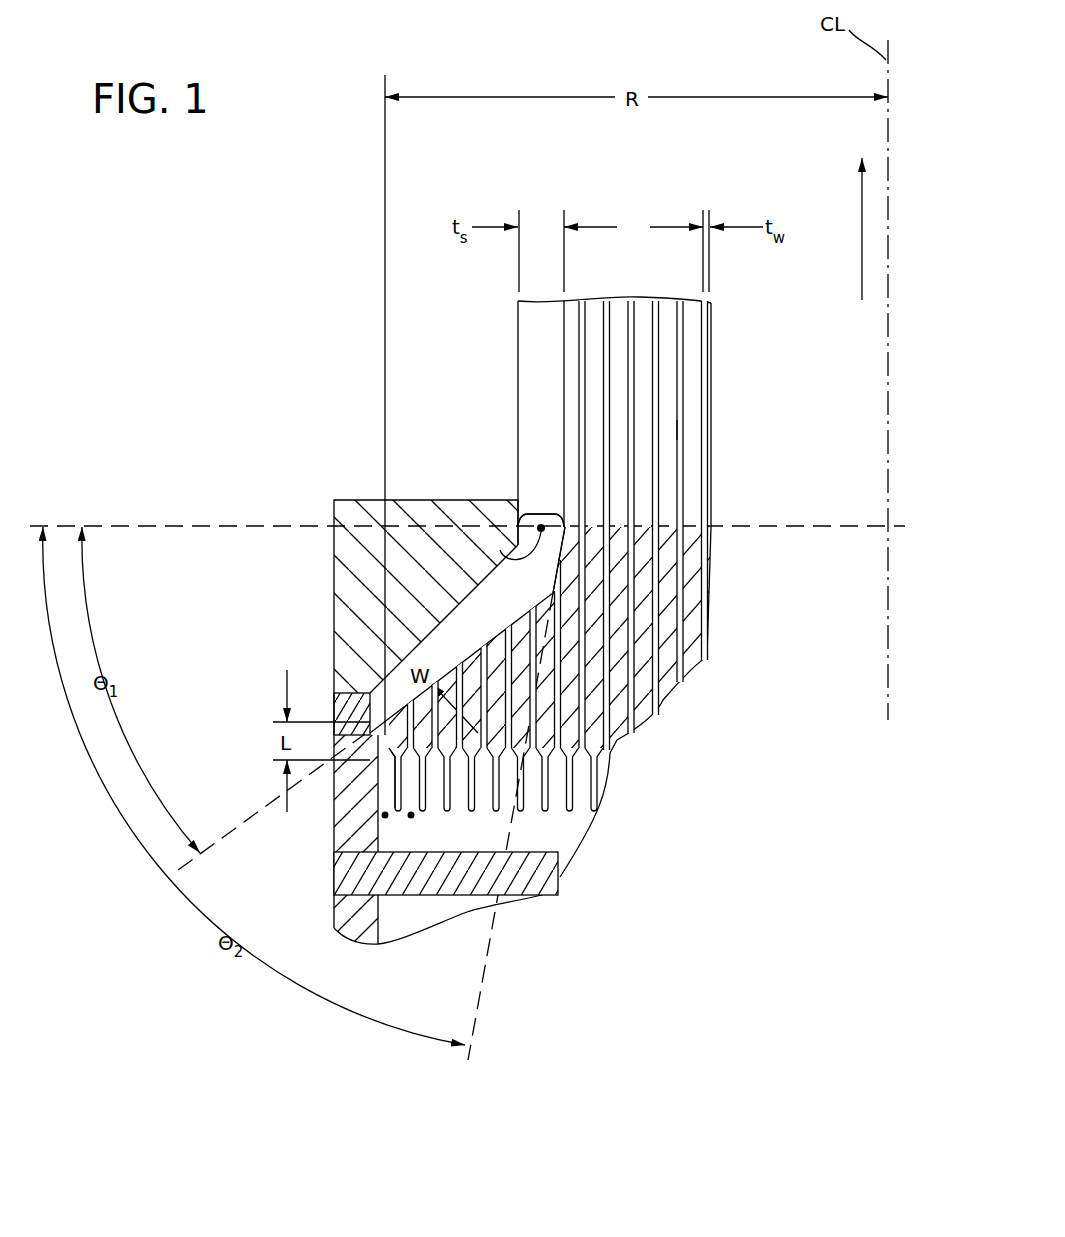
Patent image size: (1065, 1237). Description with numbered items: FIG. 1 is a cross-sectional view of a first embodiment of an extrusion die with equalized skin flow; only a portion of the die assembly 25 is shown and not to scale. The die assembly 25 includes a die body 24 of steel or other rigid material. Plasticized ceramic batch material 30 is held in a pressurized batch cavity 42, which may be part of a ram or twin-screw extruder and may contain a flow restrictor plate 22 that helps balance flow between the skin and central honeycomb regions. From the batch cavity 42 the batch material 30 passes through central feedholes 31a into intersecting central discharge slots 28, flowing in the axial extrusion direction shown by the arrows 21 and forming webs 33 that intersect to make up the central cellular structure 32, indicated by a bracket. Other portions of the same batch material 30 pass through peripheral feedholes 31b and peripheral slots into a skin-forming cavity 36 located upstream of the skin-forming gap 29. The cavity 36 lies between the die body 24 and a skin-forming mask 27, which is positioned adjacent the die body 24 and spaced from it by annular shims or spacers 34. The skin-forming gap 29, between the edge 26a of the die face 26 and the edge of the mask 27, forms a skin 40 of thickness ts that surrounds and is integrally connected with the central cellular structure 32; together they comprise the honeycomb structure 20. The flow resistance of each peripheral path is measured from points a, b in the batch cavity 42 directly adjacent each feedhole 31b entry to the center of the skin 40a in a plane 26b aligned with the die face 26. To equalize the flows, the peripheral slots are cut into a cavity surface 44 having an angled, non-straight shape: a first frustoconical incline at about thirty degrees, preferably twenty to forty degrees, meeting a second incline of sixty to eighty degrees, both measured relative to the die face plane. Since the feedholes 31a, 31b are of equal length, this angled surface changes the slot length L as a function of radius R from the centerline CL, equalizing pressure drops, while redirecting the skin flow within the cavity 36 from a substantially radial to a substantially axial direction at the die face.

The honeycomb structure 20 is at (724, 398).
The arrows 21 is at (862, 215).
The flow restrictor plate 22 is at (559, 887).
The die body 24 is at (710, 552).
The die assembly 25 is at (722, 648).
The die face 26 is at (646, 521).
The edge of die face 26a is at (565, 527).
The plane aligned with die face 26b is at (700, 513).
The skin-forming mask 27 is at (415, 555).
The central discharge slots 28 is at (690, 520).
The skin-forming gap 29 is at (535, 512).
The batch material 30 is at (560, 857).
The central feedholes 31a is at (603, 770).
The peripheral feedholes 31b is at (405, 790).
The central cellular structure 32 is at (709, 206).
The webs 33 is at (680, 428).
The annular shims or spacers 34 is at (333, 673).
The skin-forming cavity 36 is at (401, 655).
The skin 40 is at (513, 356).
The center of the skin 40a is at (550, 592).
The batch cavity 42 is at (468, 842).
The cavity surface 44 is at (500, 550).
The flow path measurement point a is at (385, 815).
The flow path measurement point b is at (411, 815).